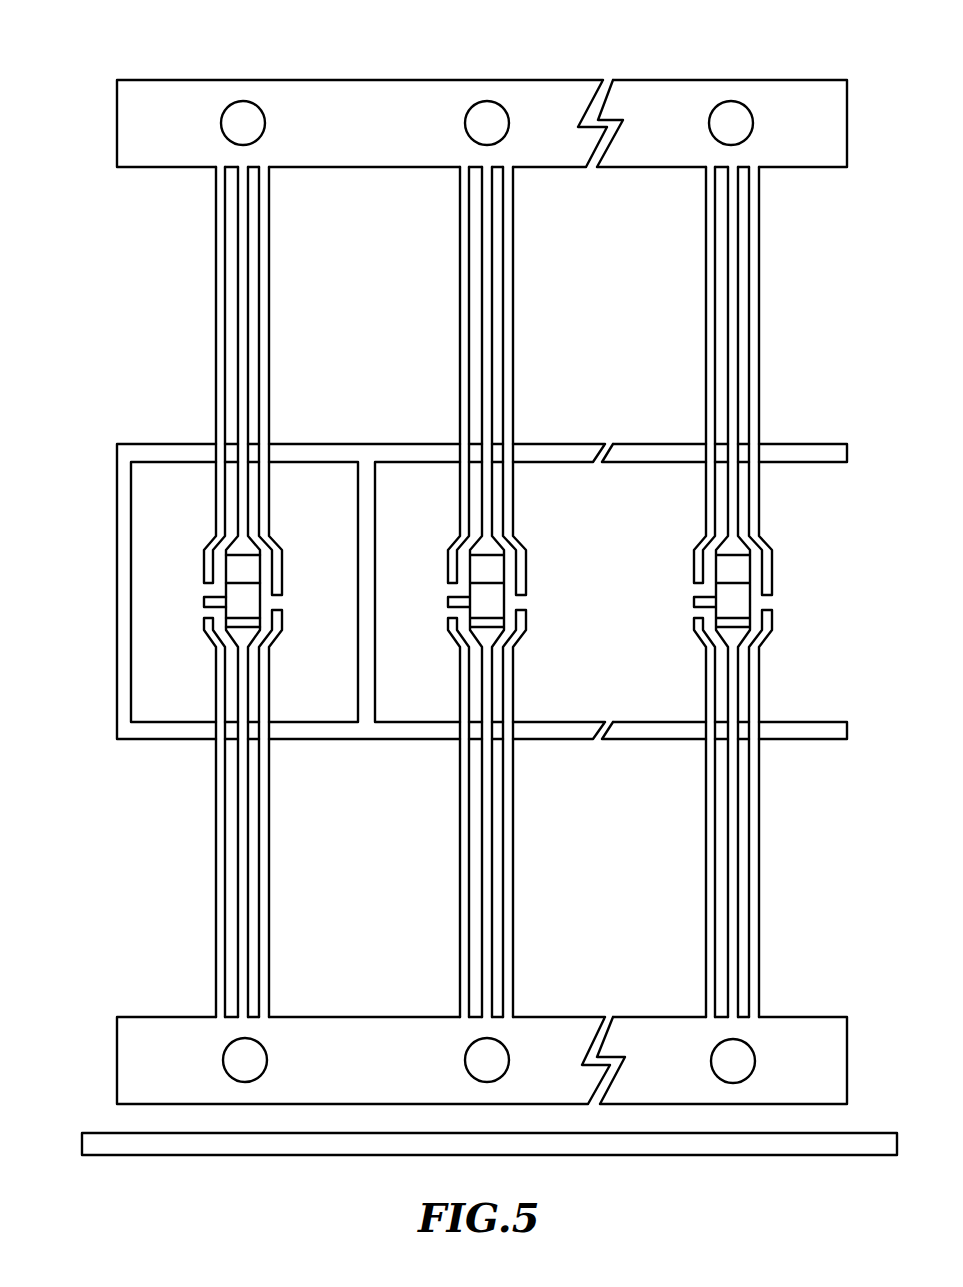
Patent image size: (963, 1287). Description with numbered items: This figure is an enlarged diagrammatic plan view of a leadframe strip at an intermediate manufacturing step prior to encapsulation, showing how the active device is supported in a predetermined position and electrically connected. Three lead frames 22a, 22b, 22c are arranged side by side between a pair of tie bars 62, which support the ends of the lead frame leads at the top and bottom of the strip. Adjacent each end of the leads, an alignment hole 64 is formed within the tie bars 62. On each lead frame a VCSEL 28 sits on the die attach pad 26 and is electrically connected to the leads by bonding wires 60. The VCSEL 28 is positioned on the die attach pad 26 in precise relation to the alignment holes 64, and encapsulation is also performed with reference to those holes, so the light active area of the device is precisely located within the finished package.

The tie bar 62 is at (453, 80).
The alignment hole 64 is at (263, 113).
The lead frame 22a is at (216, 340).
The lead frame 22b is at (460, 340).
The lead frame 22c is at (706, 340).
The bonding wire 60 is at (202, 583).
The VCSEL 28 is at (233, 612).
The die attach pad 26 is at (258, 638).